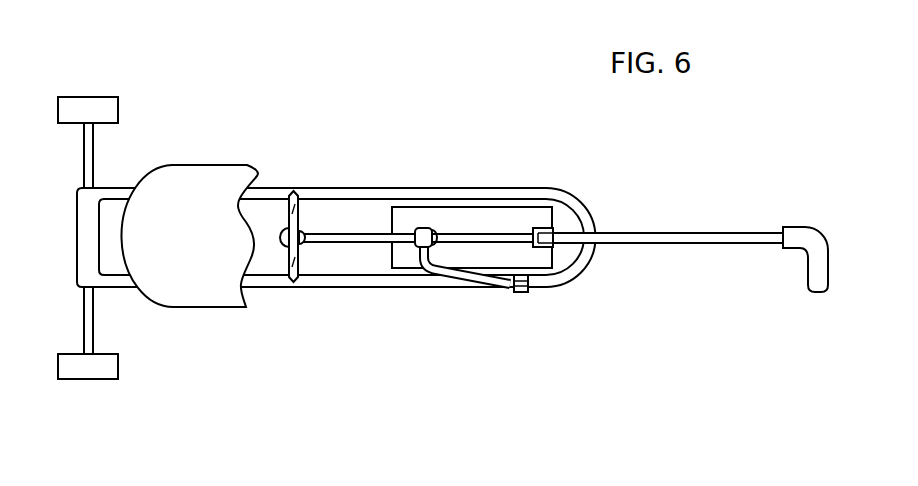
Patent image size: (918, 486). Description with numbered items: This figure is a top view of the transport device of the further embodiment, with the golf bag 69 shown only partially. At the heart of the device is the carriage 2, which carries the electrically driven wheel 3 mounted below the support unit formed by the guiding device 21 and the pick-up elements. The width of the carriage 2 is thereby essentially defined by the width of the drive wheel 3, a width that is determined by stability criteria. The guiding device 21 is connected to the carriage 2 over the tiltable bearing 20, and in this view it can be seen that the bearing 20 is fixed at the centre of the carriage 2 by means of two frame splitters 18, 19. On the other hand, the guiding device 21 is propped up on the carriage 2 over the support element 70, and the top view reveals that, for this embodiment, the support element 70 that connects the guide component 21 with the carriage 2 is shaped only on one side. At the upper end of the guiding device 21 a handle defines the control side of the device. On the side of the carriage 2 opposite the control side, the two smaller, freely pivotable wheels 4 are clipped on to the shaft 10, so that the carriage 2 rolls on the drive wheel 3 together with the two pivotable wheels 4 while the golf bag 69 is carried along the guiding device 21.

The carriage 2 is at (332, 282).
The electrically driven wheel 3 is at (495, 222).
The freely pivotable wheels 4 is at (78, 112).
The shaft 10 is at (89, 332).
The frame splitter 18 is at (294, 262).
The frame splitter 19 is at (295, 210).
The tiltable bearing 20 is at (302, 233).
The guiding device 21 is at (664, 240).
The golf bag 69 is at (202, 218).
The support element 70 is at (427, 262).